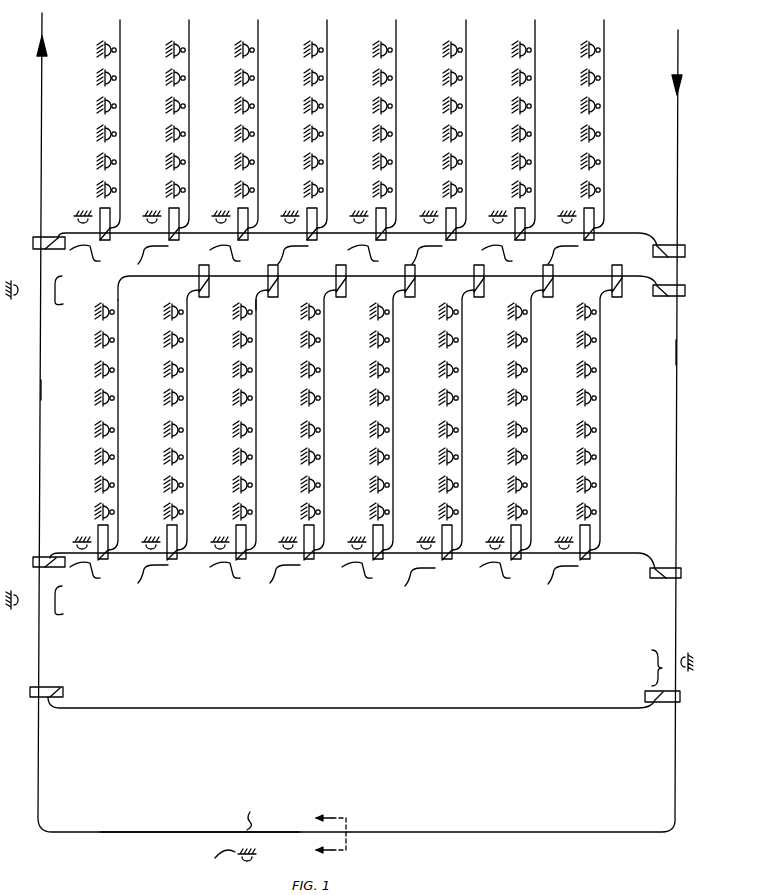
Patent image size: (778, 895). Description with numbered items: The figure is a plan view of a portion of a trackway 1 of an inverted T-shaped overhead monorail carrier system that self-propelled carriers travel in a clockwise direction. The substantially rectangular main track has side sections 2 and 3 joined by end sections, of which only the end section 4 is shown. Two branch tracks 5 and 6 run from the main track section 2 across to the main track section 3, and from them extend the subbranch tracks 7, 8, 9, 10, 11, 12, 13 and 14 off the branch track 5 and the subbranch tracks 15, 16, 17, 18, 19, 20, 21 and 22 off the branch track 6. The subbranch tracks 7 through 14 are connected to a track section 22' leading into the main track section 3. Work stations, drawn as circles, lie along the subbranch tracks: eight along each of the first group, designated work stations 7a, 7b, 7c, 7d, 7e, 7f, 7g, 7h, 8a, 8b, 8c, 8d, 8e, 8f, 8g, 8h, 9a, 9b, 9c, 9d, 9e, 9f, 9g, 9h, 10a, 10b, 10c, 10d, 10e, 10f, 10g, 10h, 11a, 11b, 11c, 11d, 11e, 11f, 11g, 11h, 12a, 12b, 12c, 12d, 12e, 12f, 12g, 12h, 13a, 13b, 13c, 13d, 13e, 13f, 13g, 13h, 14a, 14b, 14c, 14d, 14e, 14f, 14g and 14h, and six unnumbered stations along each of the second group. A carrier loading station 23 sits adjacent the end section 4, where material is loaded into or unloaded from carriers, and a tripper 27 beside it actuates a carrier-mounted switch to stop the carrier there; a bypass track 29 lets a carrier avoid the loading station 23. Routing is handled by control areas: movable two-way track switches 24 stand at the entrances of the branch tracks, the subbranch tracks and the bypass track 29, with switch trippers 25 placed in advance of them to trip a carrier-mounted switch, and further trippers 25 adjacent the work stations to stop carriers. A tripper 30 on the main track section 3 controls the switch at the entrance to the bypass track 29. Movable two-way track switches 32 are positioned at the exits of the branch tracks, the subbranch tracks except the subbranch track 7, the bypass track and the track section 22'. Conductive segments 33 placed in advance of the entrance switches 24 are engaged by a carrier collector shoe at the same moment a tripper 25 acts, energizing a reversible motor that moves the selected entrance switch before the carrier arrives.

The trackway 1 is at (677, 763).
The main track side section 2 is at (37, 389).
The main track side section 3 is at (676, 352).
The main track end section 4 is at (169, 832).
The branch track 5 is at (333, 558).
The branch track 6 is at (330, 233).
The subbranch track 7 is at (118, 414).
The subbranch track 8 is at (187, 414).
The subbranch track 9 is at (256, 414).
The subbranch track 10 is at (324, 414).
The subbranch track 11 is at (393, 414).
The subbranch track 12 is at (462, 414).
The subbranch track 13 is at (531, 414).
The subbranch track 14 is at (600, 414).
The subbranch track 15 is at (120, 177).
The subbranch track 16 is at (189, 177).
The subbranch track 17 is at (258, 177).
The subbranch track 18 is at (327, 177).
The subbranch track 19 is at (396, 177).
The subbranch track 20 is at (466, 177).
The subbranch track 21 is at (535, 177).
The subbranch track 22 is at (596, 130).
The track section 22' is at (282, 297).
The carrier loading station 23 is at (251, 812).
The movable two-way track switch 24 is at (694, 696).
The switch tripper 25 is at (22, 610).
The tripper 27 is at (220, 857).
The bypass track 29 is at (236, 708).
The tripper 30 is at (685, 658).
The movable two-way track switch 32 is at (70, 677).
The conductive segment 33 is at (645, 668).
The work station 7a is at (114, 512).
The work station 7b is at (114, 485).
The work station 7c is at (114, 457).
The work station 7d is at (114, 430).
The work station 7e is at (114, 398).
The work station 7f is at (114, 370).
The work station 7g is at (114, 340).
The work station 7h is at (114, 312).
The work station 8a is at (183, 512).
The work station 8b is at (183, 485).
The work station 8c is at (183, 457).
The work station 8d is at (183, 430).
The work station 8e is at (183, 398).
The work station 8f is at (183, 370).
The work station 8g is at (183, 340).
The work station 8h is at (183, 312).
The work station 9a is at (252, 512).
The work station 9b is at (252, 485).
The work station 9c is at (252, 457).
The work station 9d is at (252, 430).
The work station 9e is at (252, 398).
The work station 9f is at (252, 370).
The work station 9g is at (252, 340).
The work station 9h is at (252, 312).
The work station 10a is at (320, 512).
The work station 10b is at (320, 485).
The work station 10c is at (320, 457).
The work station 10d is at (320, 430).
The work station 10e is at (320, 398).
The work station 10f is at (320, 370).
The work station 10g is at (320, 340).
The work station 10h is at (320, 312).
The work station 11a is at (389, 512).
The work station 11b is at (389, 485).
The work station 11c is at (389, 457).
The work station 11d is at (389, 430).
The work station 11e is at (389, 398).
The work station 11f is at (389, 370).
The work station 11g is at (389, 340).
The work station 11h is at (389, 312).
The work station 12a is at (458, 512).
The work station 12b is at (458, 485).
The work station 12c is at (458, 457).
The work station 12d is at (458, 430).
The work station 12e is at (458, 398).
The work station 12f is at (458, 370).
The work station 12g is at (458, 340).
The work station 12h is at (458, 312).
The work station 13a is at (527, 512).
The work station 13b is at (527, 485).
The work station 13c is at (527, 457).
The work station 13d is at (527, 430).
The work station 13e is at (527, 398).
The work station 13f is at (527, 370).
The work station 13g is at (527, 340).
The work station 13h is at (527, 312).
The work station 14a is at (596, 512).
The work station 14b is at (596, 485).
The work station 14c is at (596, 457).
The work station 14d is at (596, 430).
The work station 14e is at (596, 398).
The work station 14f is at (596, 370).
The work station 14g is at (596, 340).
The work station 14h is at (596, 312).